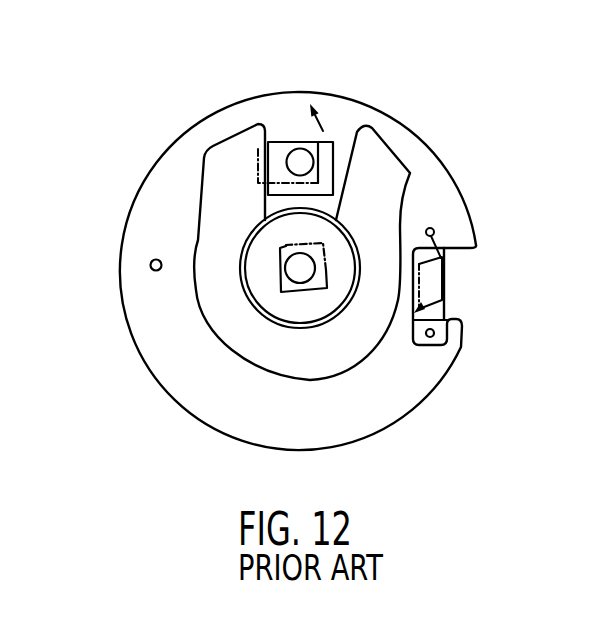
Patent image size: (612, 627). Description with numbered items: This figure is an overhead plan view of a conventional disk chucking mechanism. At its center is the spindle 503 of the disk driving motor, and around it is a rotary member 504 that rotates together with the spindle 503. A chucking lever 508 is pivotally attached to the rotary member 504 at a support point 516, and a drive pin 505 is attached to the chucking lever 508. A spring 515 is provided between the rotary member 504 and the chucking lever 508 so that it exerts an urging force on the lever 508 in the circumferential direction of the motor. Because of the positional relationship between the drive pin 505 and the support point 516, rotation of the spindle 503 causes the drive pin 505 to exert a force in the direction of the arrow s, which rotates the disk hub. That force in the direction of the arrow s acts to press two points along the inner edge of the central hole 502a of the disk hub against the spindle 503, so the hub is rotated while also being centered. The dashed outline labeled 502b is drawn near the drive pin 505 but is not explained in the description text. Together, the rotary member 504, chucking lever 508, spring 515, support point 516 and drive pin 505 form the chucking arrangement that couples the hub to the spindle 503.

The rotary member 504 is at (441, 387).
The spindle 503 is at (313, 260).
The drive pin 505 is at (298, 148).
The central hole 502a is at (280, 247).
The lever portion (second position) 502b is at (257, 181).
The spring 515 is at (444, 290).
The chucking lever 508 is at (447, 327).
The support point 516 is at (150, 268).
The arrow s is at (326, 124).